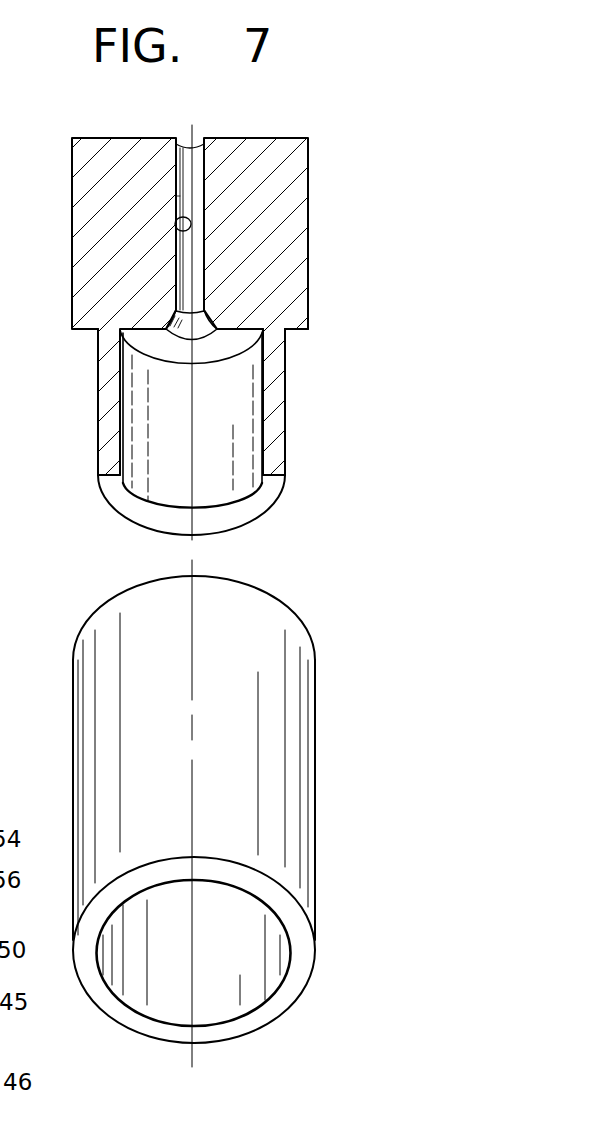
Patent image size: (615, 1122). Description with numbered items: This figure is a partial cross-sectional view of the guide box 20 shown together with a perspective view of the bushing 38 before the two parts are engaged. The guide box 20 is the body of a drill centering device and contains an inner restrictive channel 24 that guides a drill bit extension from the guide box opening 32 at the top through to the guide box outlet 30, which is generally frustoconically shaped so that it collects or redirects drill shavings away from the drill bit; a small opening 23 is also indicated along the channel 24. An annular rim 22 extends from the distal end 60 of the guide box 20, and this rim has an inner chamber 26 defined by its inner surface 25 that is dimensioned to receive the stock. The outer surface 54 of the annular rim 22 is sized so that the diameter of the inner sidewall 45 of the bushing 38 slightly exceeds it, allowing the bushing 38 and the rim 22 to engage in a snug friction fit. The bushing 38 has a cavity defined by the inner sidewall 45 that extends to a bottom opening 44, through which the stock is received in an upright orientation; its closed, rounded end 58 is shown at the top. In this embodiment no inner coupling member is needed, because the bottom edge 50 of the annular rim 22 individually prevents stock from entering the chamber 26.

The guide box 20 is at (302, 186).
The annular rim 22 is at (280, 374).
The passage opening 23 is at (180, 236).
The inner restrictive channel 24 is at (183, 199).
The inner surface 25 is at (255, 412).
The inner chamber 26 is at (245, 452).
The guide box outlet 30 is at (207, 333).
The guide box opening 32 is at (193, 125).
The bushing 38 is at (248, 723).
The bottom opening 44 is at (248, 1002).
The inner sidewall 45 is at (240, 957).
The bottom edge 50 is at (273, 490).
The outer surface 54 is at (100, 442).
The dome end 58 is at (285, 607).
The distal end 60 is at (290, 331).